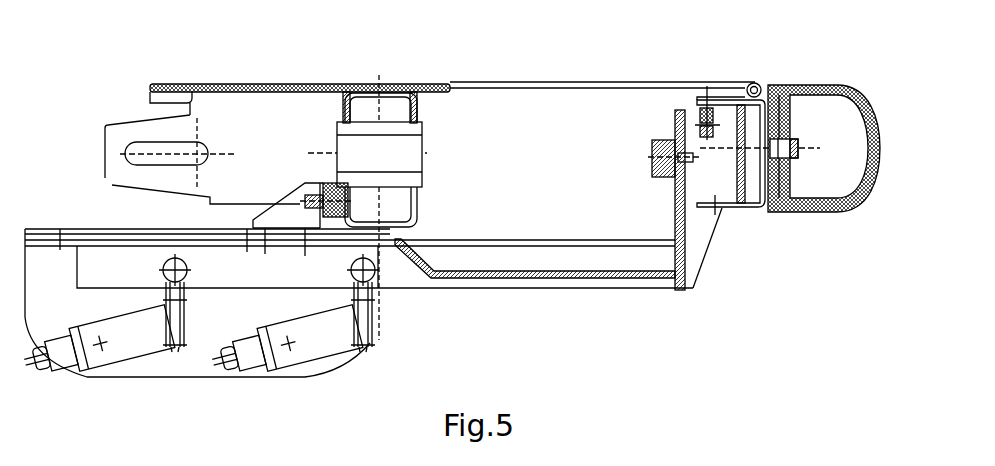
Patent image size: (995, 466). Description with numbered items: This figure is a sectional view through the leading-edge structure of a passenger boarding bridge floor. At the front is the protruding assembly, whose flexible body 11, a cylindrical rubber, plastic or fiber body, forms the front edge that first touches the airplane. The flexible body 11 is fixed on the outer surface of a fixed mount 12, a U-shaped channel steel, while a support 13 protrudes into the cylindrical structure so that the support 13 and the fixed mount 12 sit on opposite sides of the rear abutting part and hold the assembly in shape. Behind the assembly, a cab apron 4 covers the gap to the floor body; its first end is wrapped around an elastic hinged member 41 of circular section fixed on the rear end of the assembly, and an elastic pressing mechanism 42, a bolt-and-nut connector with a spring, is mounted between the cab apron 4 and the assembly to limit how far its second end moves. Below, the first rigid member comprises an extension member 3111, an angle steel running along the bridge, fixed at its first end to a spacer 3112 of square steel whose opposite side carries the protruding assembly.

The cab apron 4 is at (580, 83).
The elastic hinged member 41 is at (752, 83).
The elastic pressing mechanism 42 is at (706, 86).
The flexible body 11 is at (880, 113).
The fixed mount 12 is at (762, 207).
The support 13 is at (790, 168).
The extension member 3111 is at (632, 267).
The spacer 3112 is at (704, 257).